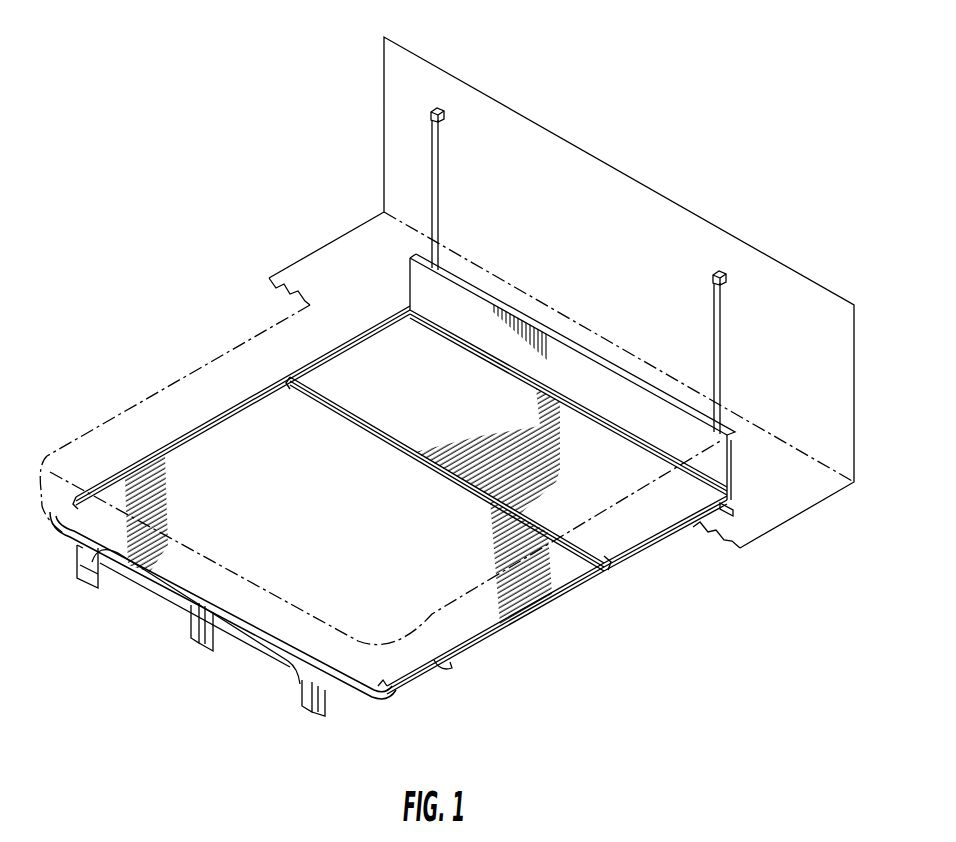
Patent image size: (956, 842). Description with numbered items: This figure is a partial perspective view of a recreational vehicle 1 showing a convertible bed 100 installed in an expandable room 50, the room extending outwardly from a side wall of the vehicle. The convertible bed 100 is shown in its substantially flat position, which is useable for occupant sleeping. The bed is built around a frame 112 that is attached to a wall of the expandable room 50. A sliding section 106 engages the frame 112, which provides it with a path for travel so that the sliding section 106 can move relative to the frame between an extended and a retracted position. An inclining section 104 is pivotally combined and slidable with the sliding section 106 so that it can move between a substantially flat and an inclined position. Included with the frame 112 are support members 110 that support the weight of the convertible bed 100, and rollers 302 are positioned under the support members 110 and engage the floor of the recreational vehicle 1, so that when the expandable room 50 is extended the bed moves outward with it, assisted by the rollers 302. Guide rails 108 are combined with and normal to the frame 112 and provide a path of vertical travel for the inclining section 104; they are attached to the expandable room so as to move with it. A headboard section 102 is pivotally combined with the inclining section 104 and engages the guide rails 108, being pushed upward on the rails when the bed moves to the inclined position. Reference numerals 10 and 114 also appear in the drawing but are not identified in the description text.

The recreational vehicle 1 is at (268, 160).
The mattress 10 is at (196, 371).
The expandable room 50 is at (458, 77).
The convertible bed 100 is at (210, 283).
The headboard section 102 is at (733, 457).
The inclining section 104 is at (653, 543).
The sliding section 106 is at (505, 634).
The guide rails 108 is at (445, 163).
The support members 110 is at (311, 709).
The frame 112 is at (200, 645).
The mattress retainer clip 114 is at (85, 582).
The rollers 302 is at (441, 669).